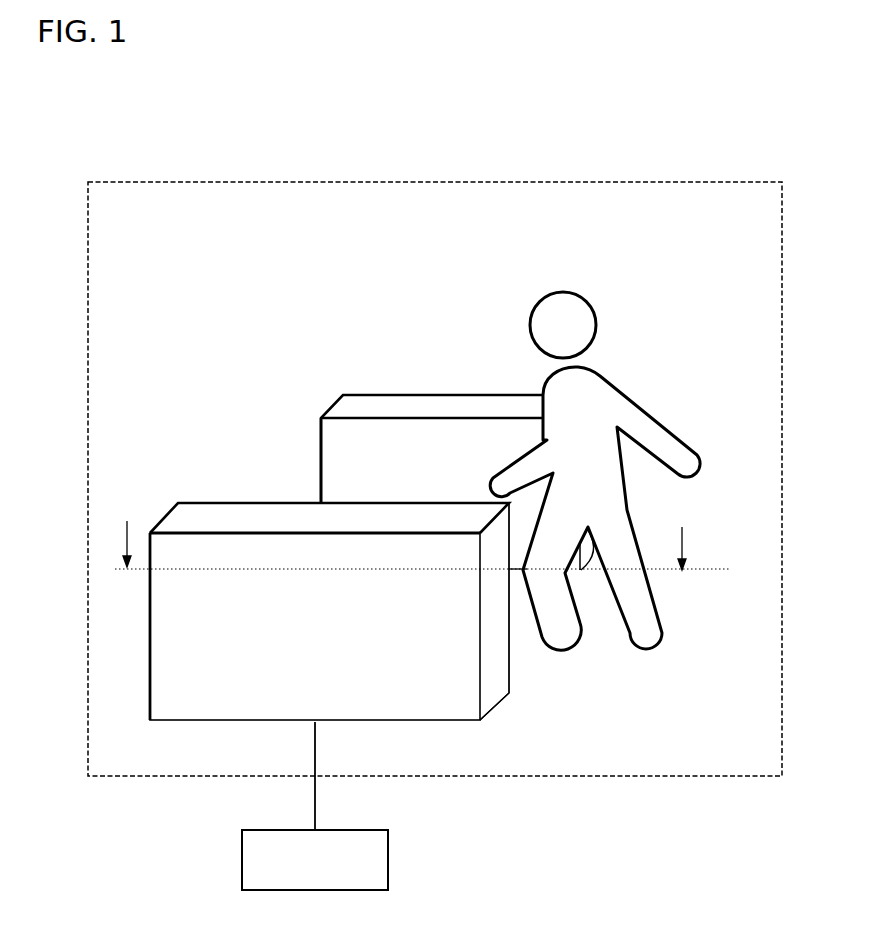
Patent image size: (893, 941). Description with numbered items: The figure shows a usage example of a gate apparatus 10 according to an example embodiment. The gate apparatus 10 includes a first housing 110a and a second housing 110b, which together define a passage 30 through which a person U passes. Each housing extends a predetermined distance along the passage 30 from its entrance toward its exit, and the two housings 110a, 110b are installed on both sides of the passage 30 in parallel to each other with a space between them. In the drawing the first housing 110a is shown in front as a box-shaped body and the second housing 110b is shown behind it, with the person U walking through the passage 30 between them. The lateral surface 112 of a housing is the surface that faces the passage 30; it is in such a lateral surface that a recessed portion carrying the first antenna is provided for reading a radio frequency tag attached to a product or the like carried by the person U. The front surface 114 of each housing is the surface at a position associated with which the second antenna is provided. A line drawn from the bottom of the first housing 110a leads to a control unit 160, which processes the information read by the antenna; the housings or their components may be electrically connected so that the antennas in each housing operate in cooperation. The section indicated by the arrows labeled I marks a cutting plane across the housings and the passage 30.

The gate apparatus 10 is at (563, 181).
The first housing 110a is at (203, 513).
The second housing 110b is at (417, 400).
The lateral surface 112 is at (330, 447).
The front surface 114 is at (497, 682).
The passage 30 is at (530, 657).
The person U is at (582, 293).
The control unit 160 is at (390, 858).
The section line I is at (422, 533).